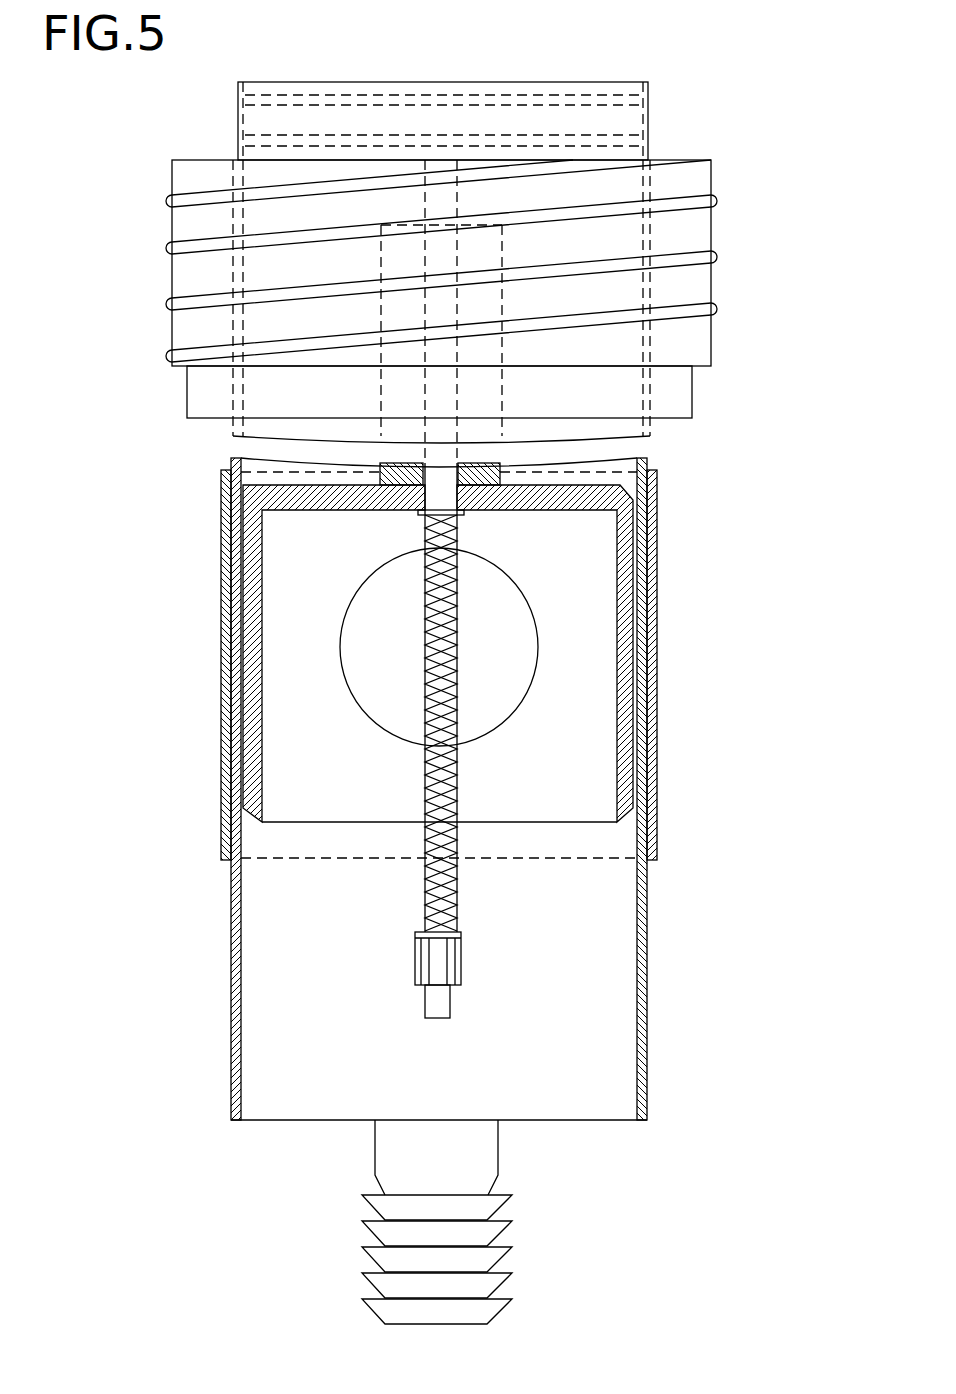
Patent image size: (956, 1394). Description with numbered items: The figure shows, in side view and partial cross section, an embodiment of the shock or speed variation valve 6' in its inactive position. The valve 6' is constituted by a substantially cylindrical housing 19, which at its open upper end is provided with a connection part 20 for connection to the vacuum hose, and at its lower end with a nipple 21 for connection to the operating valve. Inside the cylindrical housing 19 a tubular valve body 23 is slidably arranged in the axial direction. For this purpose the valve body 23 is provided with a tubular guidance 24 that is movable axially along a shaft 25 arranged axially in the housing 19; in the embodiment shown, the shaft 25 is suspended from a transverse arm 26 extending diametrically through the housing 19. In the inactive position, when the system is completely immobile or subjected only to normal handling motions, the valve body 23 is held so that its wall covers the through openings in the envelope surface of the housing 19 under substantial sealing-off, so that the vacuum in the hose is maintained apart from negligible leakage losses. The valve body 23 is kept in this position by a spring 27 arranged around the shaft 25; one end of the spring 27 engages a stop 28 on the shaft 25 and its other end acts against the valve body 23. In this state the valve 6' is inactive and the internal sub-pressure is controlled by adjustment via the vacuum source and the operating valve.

The transverse arm 26 is at (393, 118).
The shaft 25 is at (455, 201).
The connection part 20 is at (711, 278).
The tubular guidance 24 is at (480, 399).
The tubular valve body 23 is at (625, 527).
The shock or speed variation valve 6' is at (380, 665).
The cylindrical housing 19 is at (645, 910).
The spring 27 is at (453, 895).
The stop 28 is at (452, 968).
The nipple 21 is at (492, 1228).